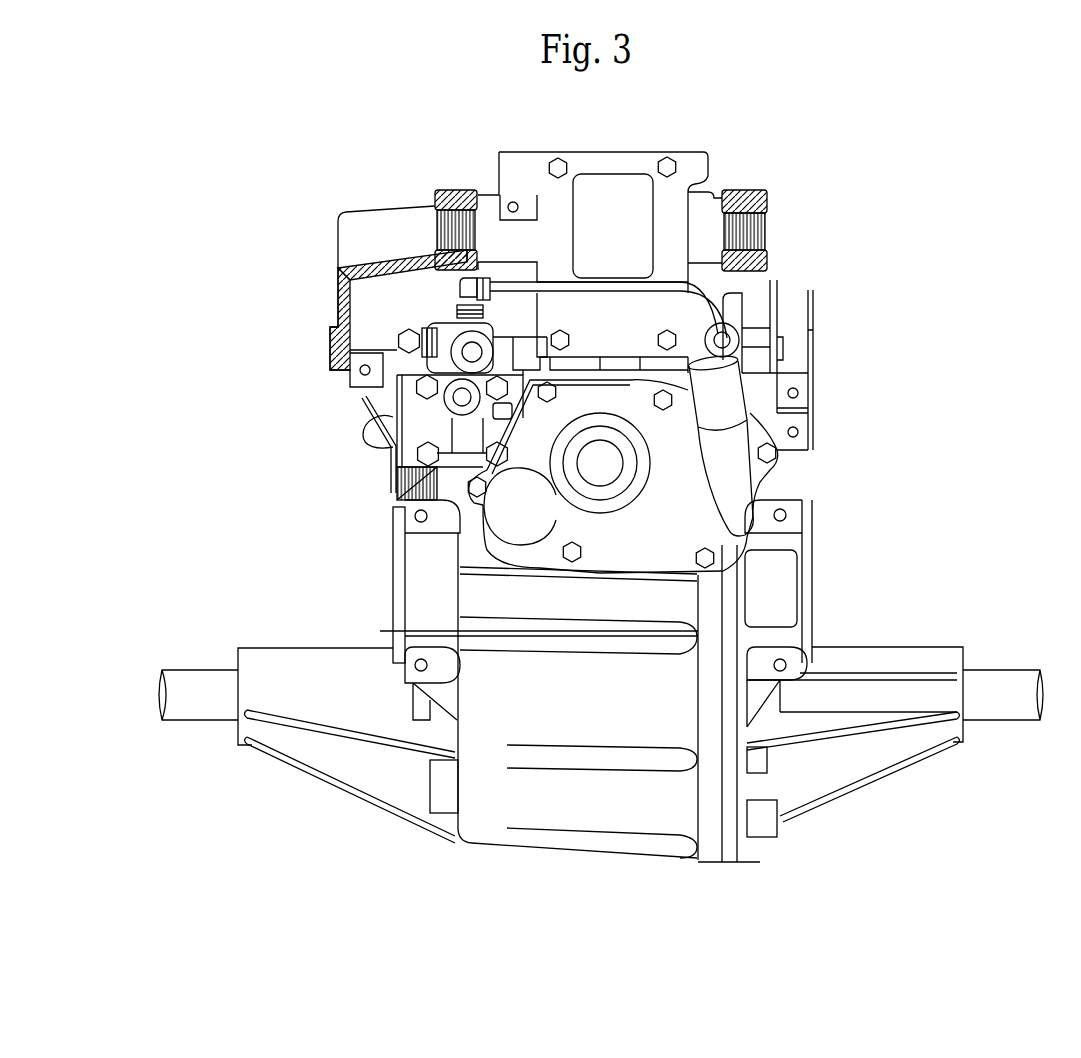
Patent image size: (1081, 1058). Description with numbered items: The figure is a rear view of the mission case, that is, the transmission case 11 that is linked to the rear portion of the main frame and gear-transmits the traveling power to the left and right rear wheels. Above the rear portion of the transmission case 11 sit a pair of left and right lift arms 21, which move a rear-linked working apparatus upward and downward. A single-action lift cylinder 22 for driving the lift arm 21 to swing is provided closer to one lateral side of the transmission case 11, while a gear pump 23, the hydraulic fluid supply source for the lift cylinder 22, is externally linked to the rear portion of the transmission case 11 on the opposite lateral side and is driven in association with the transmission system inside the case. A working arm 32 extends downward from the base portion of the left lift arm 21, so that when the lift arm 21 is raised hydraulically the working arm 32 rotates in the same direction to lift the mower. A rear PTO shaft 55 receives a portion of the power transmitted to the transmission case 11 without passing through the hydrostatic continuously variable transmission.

The transmission case 11 is at (487, 826).
The lift arm 21 is at (447, 190).
The lift cylinder 22 is at (613, 158).
The gear pump 23 is at (410, 410).
The working arm 32 is at (338, 305).
The rear PTO shaft 55 is at (616, 466).